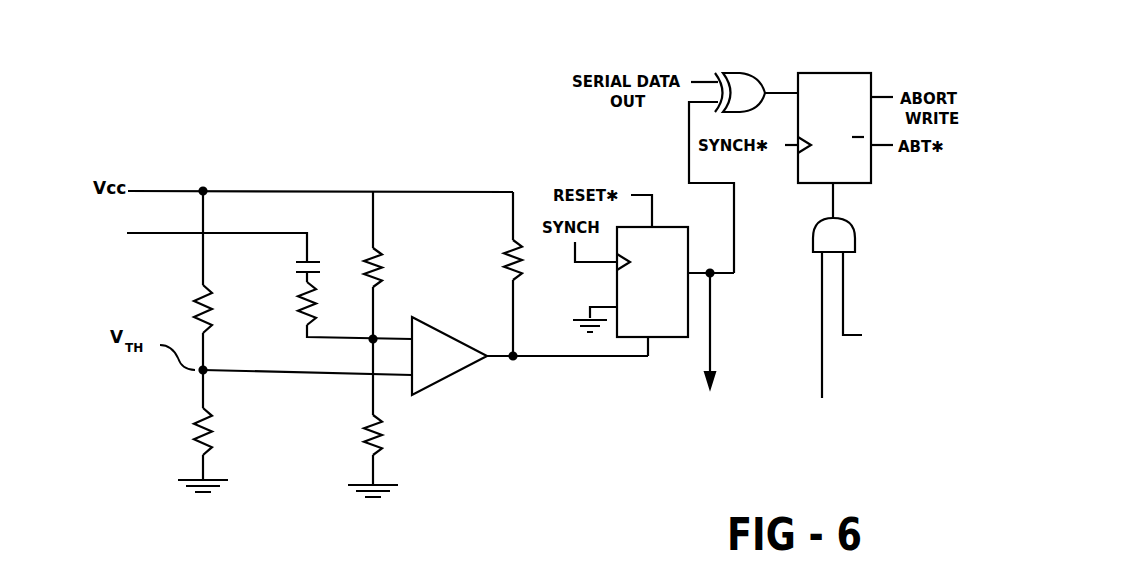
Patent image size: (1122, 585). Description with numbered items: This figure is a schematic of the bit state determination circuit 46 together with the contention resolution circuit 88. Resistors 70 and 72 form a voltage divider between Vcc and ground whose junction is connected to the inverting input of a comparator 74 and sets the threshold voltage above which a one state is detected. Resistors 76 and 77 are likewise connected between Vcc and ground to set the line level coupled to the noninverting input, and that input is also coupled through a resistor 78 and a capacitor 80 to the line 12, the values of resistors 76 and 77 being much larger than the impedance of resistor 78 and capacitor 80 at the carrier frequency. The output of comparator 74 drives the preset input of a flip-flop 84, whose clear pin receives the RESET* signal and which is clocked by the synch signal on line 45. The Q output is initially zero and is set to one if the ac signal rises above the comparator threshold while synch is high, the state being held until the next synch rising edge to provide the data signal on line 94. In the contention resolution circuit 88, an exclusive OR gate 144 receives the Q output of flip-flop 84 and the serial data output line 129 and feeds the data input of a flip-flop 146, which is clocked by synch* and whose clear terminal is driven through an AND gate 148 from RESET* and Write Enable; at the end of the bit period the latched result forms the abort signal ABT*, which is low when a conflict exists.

The line 12 is at (146, 233).
The line 45 is at (600, 266).
The bit state determination circuit 46 is at (300, 498).
The resistor 70 is at (190, 300).
The resistor 72 is at (190, 415).
The comparator 74 is at (460, 377).
The resistor 76 is at (378, 278).
The resistor 77 is at (382, 444).
The resistor 78 is at (298, 305).
The capacitor 80 is at (304, 262).
The flip-flop 84 is at (672, 228).
The contention resolution circuit 88 is at (747, 440).
The line 94 is at (710, 320).
The serial data output line 129 is at (705, 82).
The exclusive OR gate 144 is at (746, 72).
The flip-flop 146 is at (825, 73).
The AND gate 148 is at (857, 228).